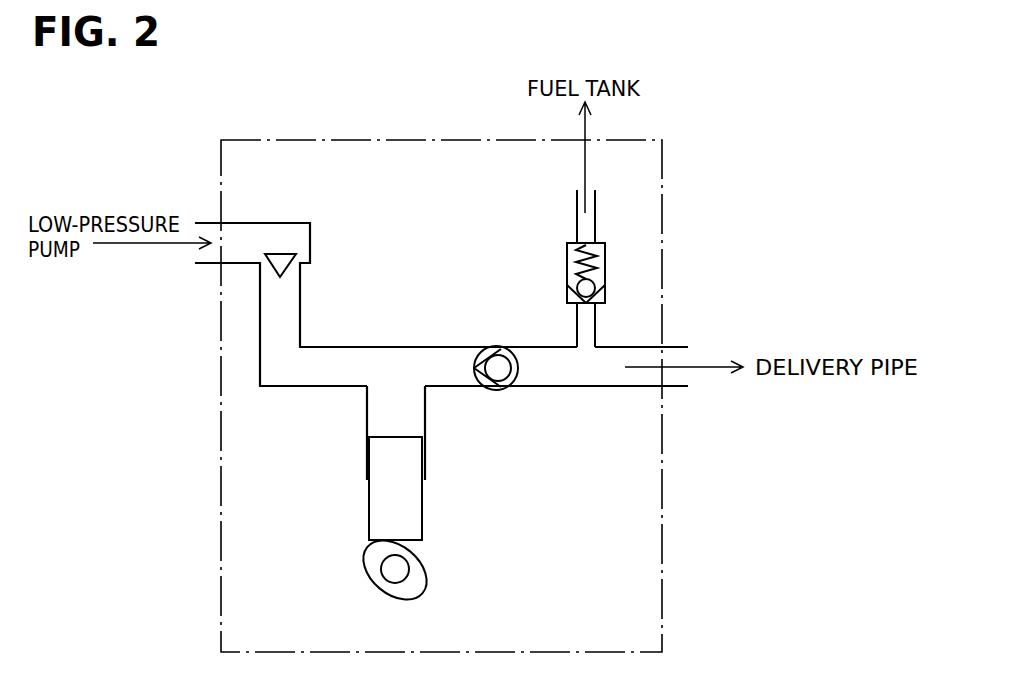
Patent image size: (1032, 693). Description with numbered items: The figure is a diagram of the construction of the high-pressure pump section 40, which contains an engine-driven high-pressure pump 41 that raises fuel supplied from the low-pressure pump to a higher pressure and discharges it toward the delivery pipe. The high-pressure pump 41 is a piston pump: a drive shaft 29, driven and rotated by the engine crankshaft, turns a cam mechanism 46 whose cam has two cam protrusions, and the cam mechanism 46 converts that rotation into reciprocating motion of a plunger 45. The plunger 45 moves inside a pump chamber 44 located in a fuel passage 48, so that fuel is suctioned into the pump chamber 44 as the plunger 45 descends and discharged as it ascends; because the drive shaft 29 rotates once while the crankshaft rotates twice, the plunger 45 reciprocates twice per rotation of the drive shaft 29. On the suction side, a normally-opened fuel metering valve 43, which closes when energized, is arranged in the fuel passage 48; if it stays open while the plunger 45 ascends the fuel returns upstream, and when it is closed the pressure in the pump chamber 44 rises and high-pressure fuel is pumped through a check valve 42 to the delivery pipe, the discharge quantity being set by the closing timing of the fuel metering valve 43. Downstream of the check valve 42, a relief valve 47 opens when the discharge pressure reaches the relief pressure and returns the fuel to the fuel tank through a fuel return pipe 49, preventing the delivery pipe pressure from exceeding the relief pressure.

The high-pressure pump section 40 is at (221, 163).
The high-pressure pump 41 is at (290, 417).
The check valve 42 is at (493, 346).
The fuel metering valve 43 is at (280, 253).
The pump chamber 44 is at (380, 407).
The plunger 45 is at (378, 506).
The cam mechanism 46 is at (365, 576).
The relief valve 47 is at (567, 263).
The fuel passage 48 is at (301, 310).
The fuel return pipe 49 is at (576, 223).
The drive shaft 29 is at (410, 568).